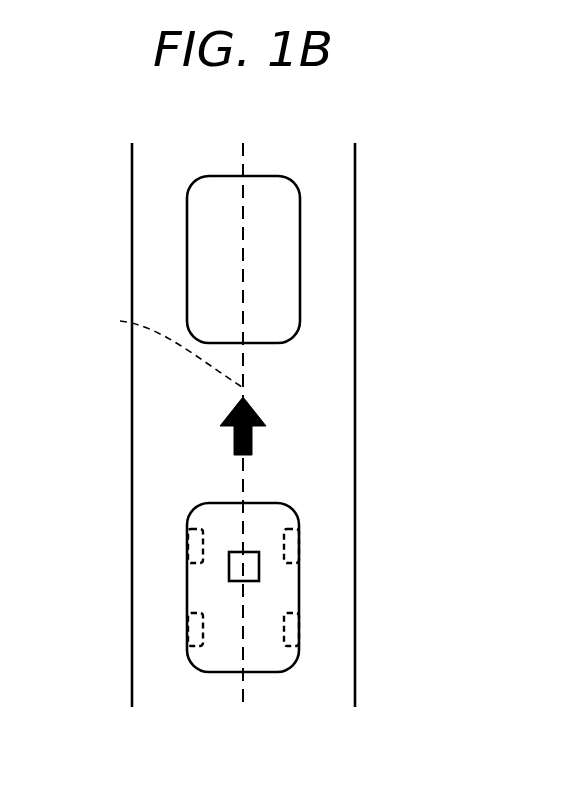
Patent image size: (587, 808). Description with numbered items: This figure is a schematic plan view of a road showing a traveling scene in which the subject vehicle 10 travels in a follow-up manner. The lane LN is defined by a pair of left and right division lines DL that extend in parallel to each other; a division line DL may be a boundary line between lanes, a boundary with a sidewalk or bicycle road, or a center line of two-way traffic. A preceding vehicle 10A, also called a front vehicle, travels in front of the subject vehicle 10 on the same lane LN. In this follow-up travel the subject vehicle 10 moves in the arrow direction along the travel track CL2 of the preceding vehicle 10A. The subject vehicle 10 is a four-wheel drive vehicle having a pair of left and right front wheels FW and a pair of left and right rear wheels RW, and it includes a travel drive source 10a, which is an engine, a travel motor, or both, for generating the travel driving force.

The lane LN is at (314, 152).
The division line DL is at (132, 437).
The preceding vehicle 10A is at (300, 237).
The travel track CL2 is at (153, 346).
The subject vehicle 10 is at (298, 598).
The travel drive source 10a is at (228, 564).
The front wheel FW is at (188, 548).
The rear wheel RW is at (188, 627).